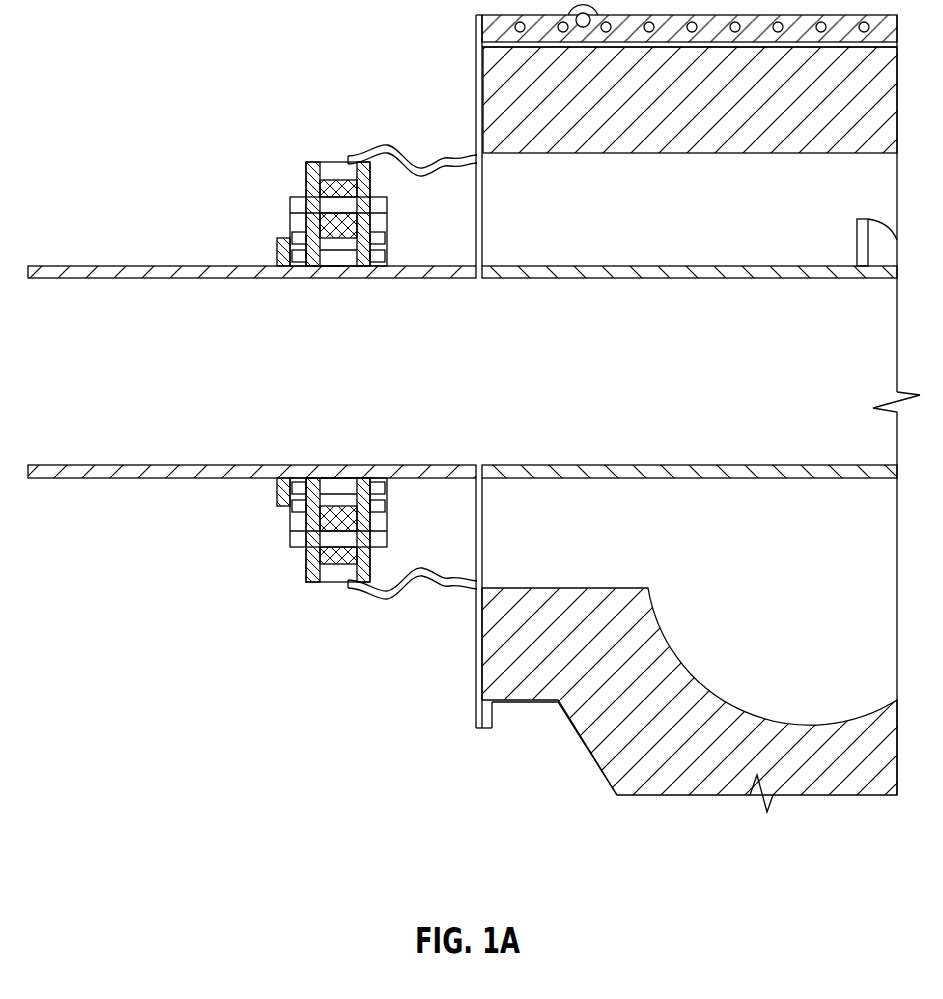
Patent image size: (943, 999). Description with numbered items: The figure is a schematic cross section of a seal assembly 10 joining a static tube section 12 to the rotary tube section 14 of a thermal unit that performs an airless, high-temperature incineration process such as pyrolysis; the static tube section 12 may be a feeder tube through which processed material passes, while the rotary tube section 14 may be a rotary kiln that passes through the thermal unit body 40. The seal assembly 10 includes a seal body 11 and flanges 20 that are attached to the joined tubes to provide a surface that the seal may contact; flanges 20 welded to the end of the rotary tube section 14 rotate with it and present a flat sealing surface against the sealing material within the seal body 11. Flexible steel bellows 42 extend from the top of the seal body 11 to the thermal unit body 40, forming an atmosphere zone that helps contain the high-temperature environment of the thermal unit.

The seal assembly 10 is at (328, 118).
The seal body 11 is at (313, 162).
The static tube section 12 is at (200, 478).
The rotary tube section 14 is at (477, 482).
The flanges 20 is at (357, 255).
The thermal unit body 40 is at (602, 145).
The flexible steel bellows 42 is at (423, 170).